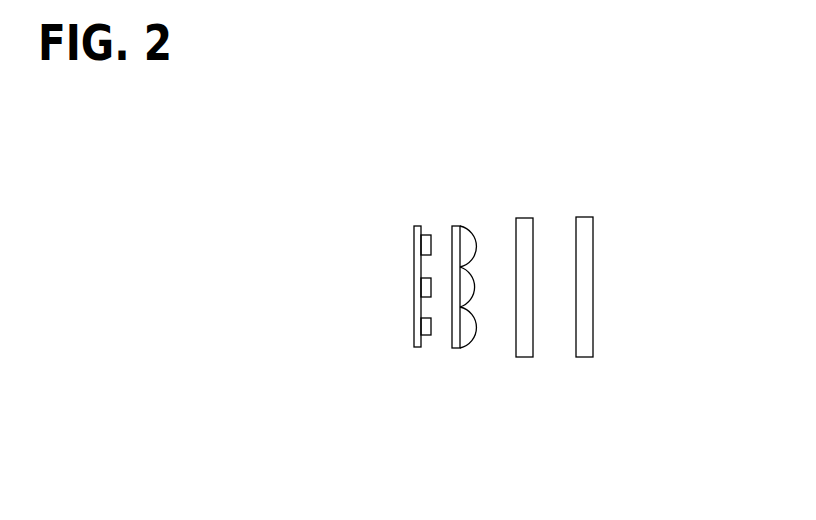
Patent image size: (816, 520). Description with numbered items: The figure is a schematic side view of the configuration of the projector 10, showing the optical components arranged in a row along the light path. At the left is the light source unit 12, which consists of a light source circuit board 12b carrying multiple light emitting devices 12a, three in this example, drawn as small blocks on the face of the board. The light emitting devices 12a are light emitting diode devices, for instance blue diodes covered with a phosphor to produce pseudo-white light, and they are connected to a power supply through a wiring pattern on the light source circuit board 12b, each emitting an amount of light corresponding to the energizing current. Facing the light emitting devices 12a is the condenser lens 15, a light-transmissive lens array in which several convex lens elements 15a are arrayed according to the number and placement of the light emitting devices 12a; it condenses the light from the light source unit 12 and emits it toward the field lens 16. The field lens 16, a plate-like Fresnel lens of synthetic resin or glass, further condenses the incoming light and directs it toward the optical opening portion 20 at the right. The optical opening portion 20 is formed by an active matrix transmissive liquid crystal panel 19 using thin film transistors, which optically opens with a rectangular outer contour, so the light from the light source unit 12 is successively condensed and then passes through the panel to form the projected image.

The projector 10 is at (366, 168).
The light source unit 12 is at (385, 350).
The light emitting device 12a is at (414, 254).
The light source circuit board 12b is at (414, 247).
The condenser lens 15 is at (503, 238).
The convex lens element 15a is at (472, 234).
The field lens 16 is at (533, 351).
The active matrix transmissive liquid crystal panel 19 is at (607, 325).
The optical opening portion 20 is at (593, 351).